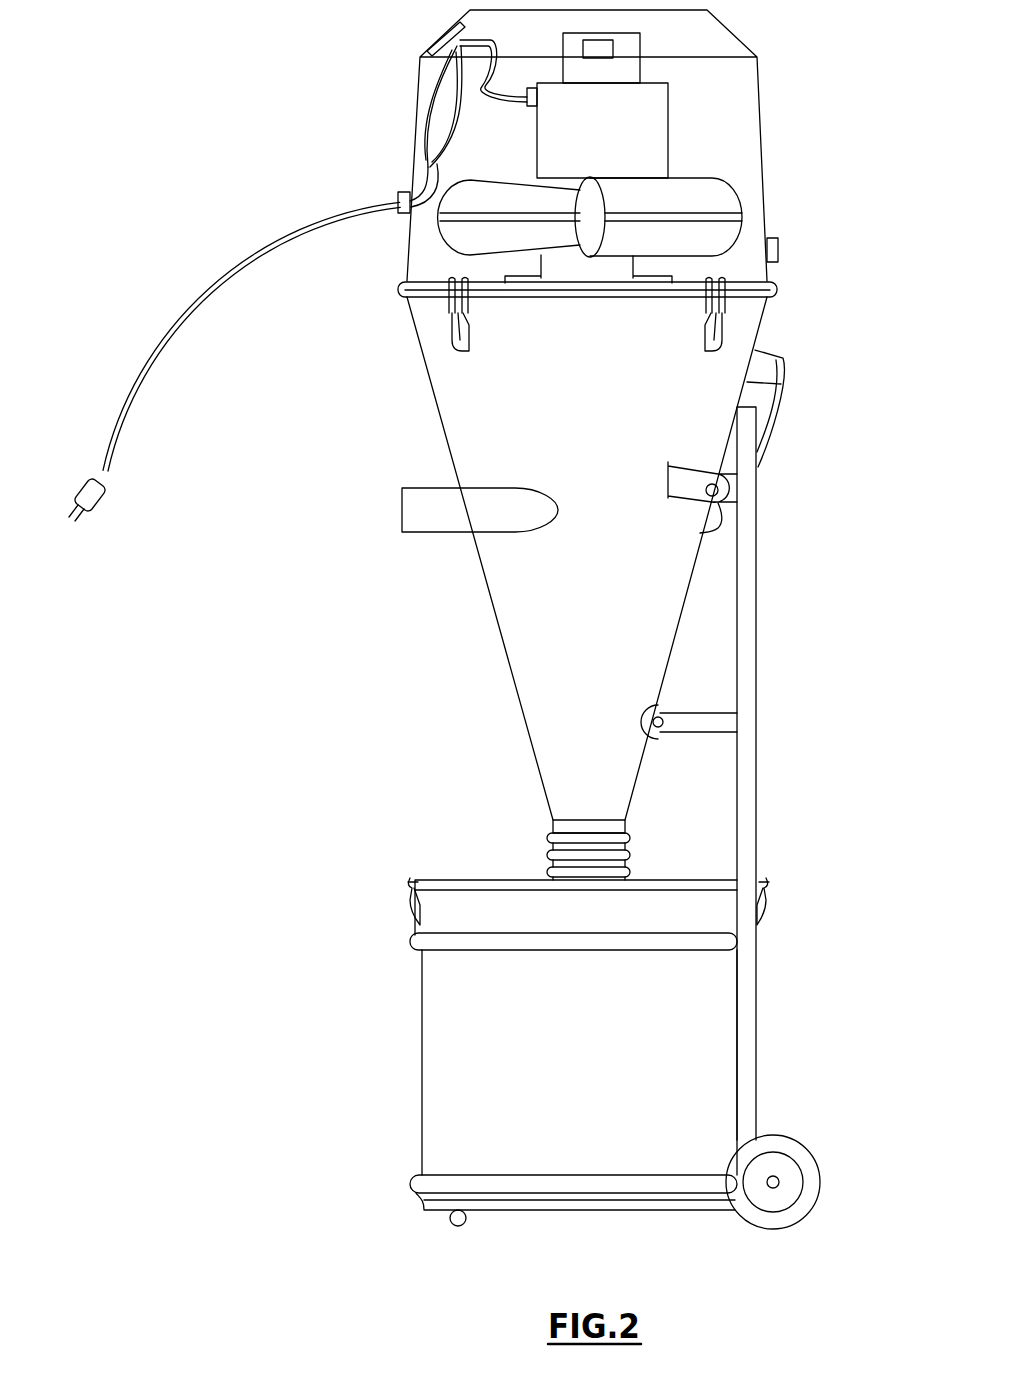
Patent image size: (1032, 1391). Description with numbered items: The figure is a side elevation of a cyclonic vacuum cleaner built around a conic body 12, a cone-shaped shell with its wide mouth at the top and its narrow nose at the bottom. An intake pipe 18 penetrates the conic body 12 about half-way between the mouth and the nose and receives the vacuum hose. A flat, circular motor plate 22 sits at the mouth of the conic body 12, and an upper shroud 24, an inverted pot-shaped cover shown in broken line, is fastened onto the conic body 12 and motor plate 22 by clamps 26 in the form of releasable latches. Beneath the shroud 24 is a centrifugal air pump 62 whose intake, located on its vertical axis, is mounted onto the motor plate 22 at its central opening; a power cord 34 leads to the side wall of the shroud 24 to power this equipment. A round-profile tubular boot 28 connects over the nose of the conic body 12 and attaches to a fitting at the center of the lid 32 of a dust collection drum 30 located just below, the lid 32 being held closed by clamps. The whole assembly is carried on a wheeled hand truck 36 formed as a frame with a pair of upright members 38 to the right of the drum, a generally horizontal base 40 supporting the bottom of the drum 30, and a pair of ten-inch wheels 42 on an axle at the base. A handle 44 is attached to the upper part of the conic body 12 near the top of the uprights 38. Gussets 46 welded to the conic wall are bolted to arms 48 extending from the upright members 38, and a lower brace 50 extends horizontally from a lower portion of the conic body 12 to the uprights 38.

The conic body 12 is at (418, 417).
The intake pipe 18 is at (443, 512).
The motor plate 22 is at (750, 278).
The upper shroud 24 is at (762, 100).
The clamps 26 is at (470, 322).
The tubular boot 28 is at (632, 855).
The dust collection drum 30 is at (445, 1028).
The lid 32 is at (463, 890).
The power cord 34 is at (293, 230).
The hand truck 36 is at (830, 685).
The upright members 38 is at (750, 775).
The base 40 is at (422, 1200).
The wheels 42 is at (793, 1135).
The handle 44 is at (780, 398).
The gussets 46 is at (678, 466).
The arms 48 is at (700, 533).
The lower brace 50 is at (685, 720).
The centrifugal air pump 62 is at (690, 178).